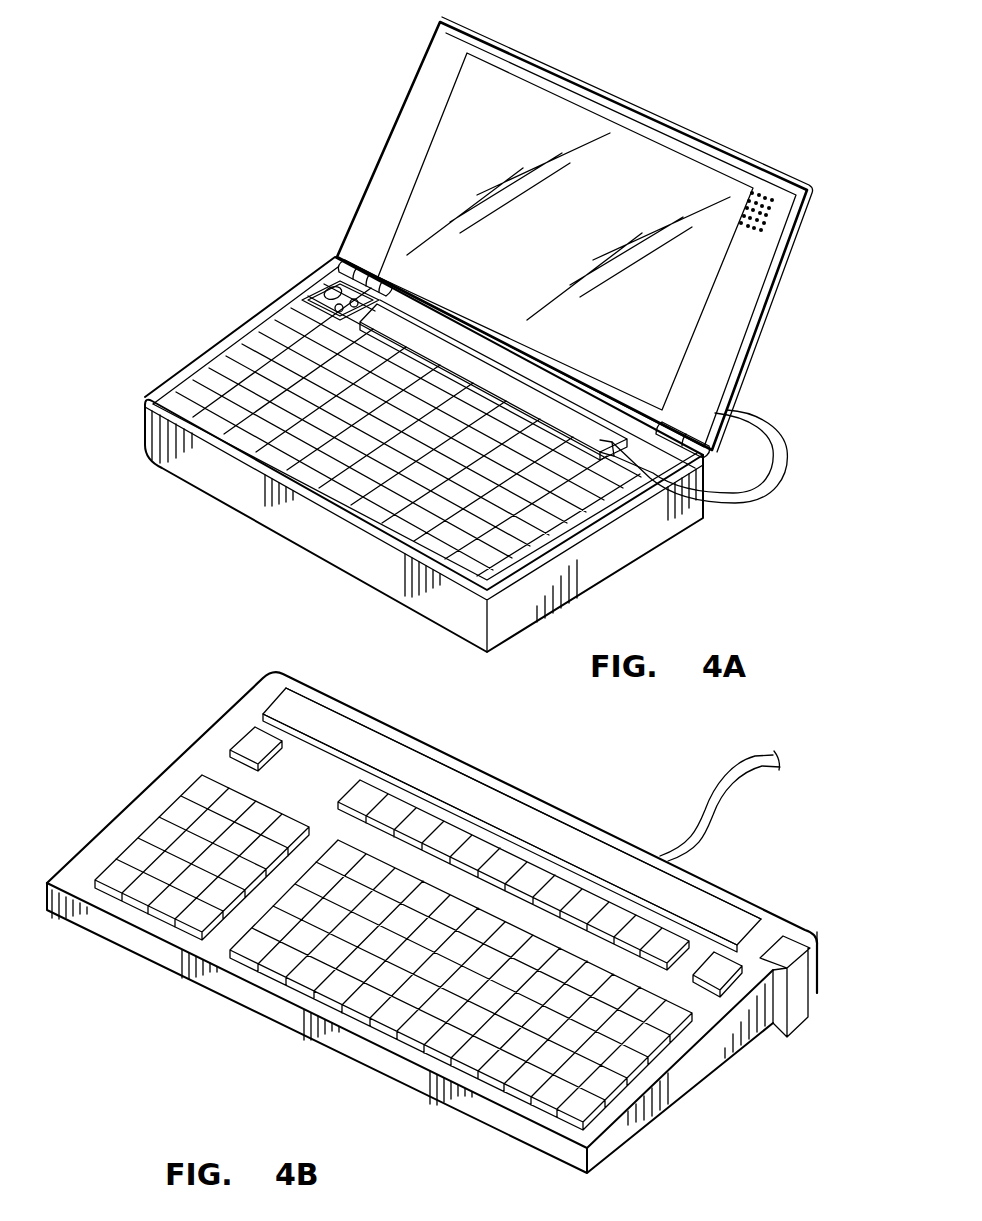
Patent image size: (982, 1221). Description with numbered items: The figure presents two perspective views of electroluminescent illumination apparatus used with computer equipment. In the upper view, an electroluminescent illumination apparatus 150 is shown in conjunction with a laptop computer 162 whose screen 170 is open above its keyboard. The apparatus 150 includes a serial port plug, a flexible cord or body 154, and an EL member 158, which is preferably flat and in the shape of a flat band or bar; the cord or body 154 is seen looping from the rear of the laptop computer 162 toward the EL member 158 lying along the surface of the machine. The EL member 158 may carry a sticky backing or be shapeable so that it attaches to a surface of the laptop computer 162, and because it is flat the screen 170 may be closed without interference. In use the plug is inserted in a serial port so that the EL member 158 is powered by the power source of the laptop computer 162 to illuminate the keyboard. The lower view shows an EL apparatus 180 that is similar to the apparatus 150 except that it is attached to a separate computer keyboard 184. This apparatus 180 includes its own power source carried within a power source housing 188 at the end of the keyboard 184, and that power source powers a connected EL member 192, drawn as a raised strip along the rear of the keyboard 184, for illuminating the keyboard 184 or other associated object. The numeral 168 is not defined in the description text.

In FIG. 4A, the laptop computer 162 is at (712, 126).
In FIG. 4A, the screen 170 is at (803, 223).
In FIG. 4A, the EL member 158 is at (338, 262).
In FIG. 4A, the electroluminescent illumination apparatus 150 is at (327, 290).
In FIG. 4A, the base unit with keyboard 168 is at (232, 324).
In FIG. 4A, the flexible cord or body 154 is at (785, 478).
In FIG. 4B, the computer keyboard 184 is at (121, 805).
In FIG. 4B, the EL apparatus 180 is at (263, 703).
In FIG. 4B, the EL member 192 is at (275, 675).
In FIG. 4B, the power source housing 188 is at (803, 930).